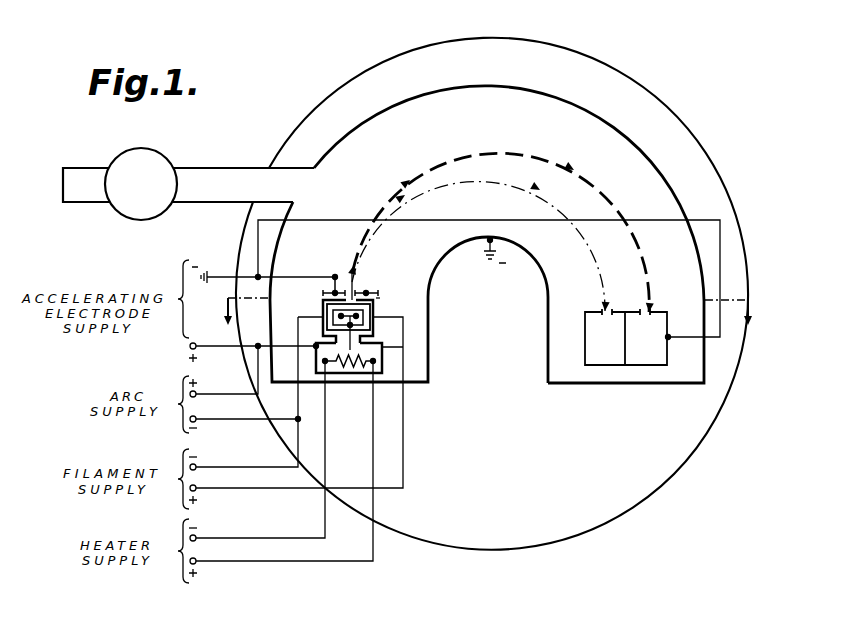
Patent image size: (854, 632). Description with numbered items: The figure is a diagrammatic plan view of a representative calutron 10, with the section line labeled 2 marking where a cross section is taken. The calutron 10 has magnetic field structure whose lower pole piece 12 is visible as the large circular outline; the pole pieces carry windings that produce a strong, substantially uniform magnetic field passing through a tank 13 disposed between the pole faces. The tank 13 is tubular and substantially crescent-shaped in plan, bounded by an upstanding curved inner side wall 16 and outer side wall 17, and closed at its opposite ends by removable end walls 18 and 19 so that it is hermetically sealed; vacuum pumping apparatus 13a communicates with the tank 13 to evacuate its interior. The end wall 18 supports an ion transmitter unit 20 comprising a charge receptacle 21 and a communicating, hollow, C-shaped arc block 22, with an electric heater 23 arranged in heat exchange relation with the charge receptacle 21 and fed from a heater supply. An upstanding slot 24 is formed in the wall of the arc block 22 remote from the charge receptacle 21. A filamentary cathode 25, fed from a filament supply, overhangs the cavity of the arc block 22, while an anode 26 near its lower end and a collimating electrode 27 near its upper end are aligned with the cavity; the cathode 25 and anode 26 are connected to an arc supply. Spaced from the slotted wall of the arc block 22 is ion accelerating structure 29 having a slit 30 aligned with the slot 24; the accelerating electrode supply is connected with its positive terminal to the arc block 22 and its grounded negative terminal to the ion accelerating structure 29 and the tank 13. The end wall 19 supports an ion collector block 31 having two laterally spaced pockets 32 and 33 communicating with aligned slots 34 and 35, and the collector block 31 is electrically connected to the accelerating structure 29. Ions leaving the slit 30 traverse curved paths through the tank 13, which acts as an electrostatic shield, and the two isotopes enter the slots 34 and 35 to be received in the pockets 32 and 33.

The calutron 10 is at (492, 279).
The lower pole piece 12 is at (338, 95).
The tank 13 is at (541, 294).
The vacuum pumping apparatus 13a is at (159, 194).
The inner side wall 16 is at (436, 270).
The outer side wall 17 is at (644, 147).
The end wall 18 is at (414, 386).
The end wall 19 is at (554, 386).
The ion transmitter unit 20 is at (375, 356).
The charge receptacle 21 is at (384, 345).
The arc block 22 is at (376, 301).
The electric heater 23 is at (353, 368).
The slot 24 is at (367, 291).
The filamentary cathode 25 is at (377, 298).
The anode 26 is at (372, 320).
The collimating electrode 27 is at (330, 312).
The ion accelerating structure 29 is at (323, 289).
The slit 30 is at (348, 290).
The ion collector block 31 is at (607, 366).
The pocket 32 is at (593, 354).
The pocket 33 is at (634, 358).
The slot 34 is at (605, 315).
The slot 35 is at (648, 323).
The section line 2- 2 is at (486, 313).